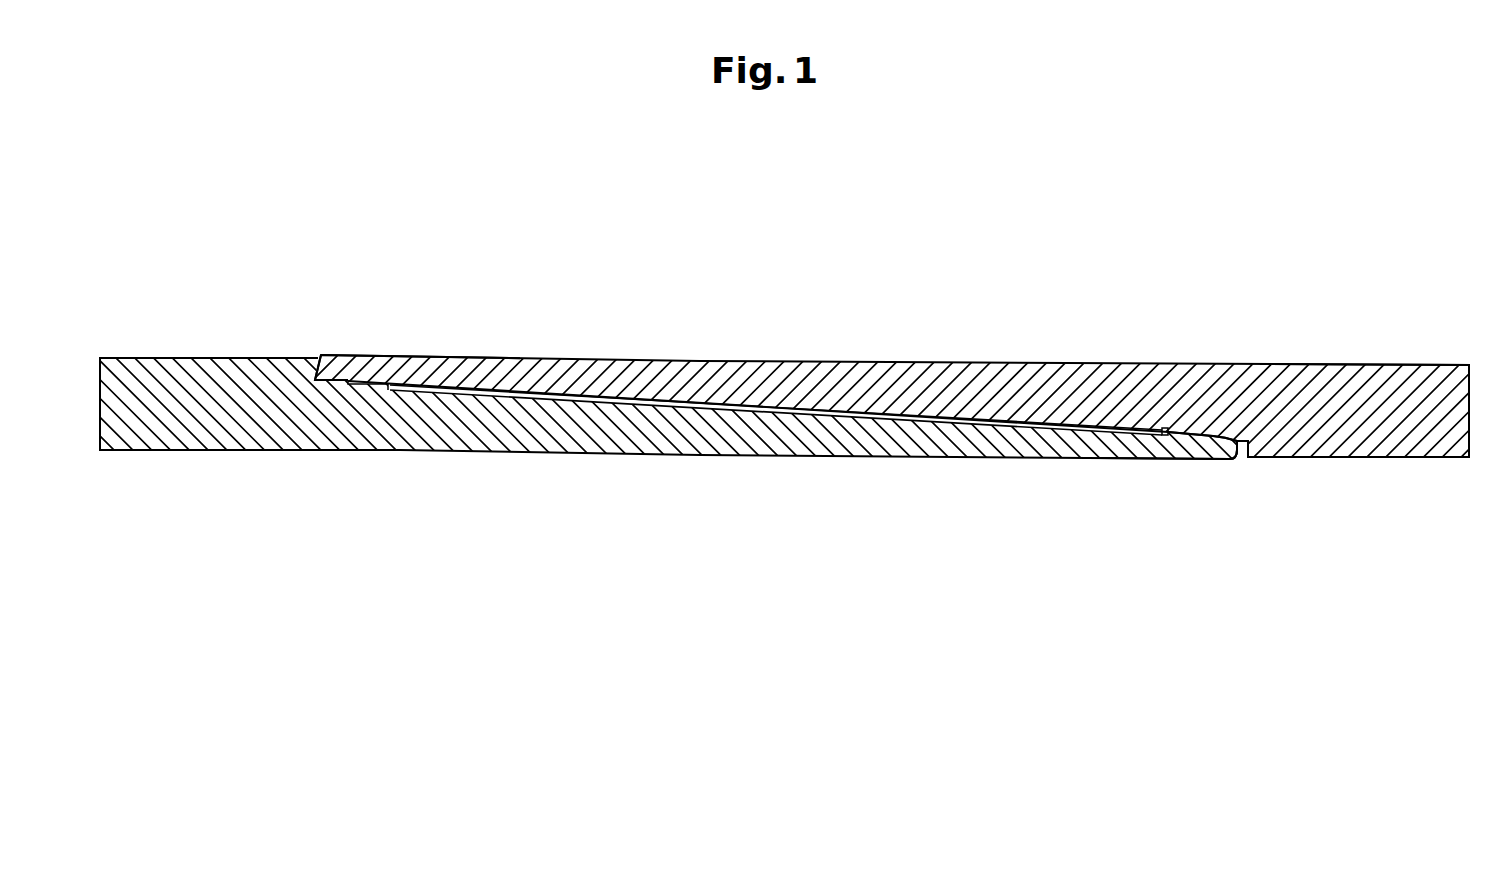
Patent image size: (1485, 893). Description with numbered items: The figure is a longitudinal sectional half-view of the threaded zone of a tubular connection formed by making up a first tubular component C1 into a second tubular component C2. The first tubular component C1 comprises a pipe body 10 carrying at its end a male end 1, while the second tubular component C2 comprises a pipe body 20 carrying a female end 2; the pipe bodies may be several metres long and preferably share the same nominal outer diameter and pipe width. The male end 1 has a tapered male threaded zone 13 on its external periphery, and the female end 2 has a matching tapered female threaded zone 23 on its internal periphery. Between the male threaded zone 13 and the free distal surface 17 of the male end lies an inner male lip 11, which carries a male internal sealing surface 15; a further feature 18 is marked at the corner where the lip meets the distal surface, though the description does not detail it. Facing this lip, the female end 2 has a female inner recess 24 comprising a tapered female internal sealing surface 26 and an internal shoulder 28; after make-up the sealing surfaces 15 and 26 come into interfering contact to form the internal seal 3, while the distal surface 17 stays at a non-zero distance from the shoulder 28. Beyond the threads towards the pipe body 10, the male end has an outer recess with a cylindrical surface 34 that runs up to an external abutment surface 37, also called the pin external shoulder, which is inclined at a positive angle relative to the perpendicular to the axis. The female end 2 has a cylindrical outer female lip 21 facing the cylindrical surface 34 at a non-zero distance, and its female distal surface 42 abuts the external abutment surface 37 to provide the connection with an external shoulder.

The male end 1 is at (975, 468).
The female end 2 is at (1004, 330).
The internal seal 3 is at (1244, 440).
The pipe body 10 is at (166, 420).
The inner male lip 11 is at (1176, 457).
The male threaded zone 13 is at (720, 410).
The male internal sealing surface 15 is at (1216, 452).
The free distal surface 17 is at (1262, 447).
The rounded edge 18 is at (1230, 460).
The pipe body 20 is at (1389, 400).
The outer female lip 21 is at (360, 362).
The female threaded zone 23 is at (810, 402).
The female inner recess 24 is at (1190, 425).
The female internal sealing surface 26 is at (1213, 432).
The internal shoulder 28 is at (1244, 450).
The male outer recess cylindrical surface 34 is at (372, 385).
The external abutment surface 37 is at (342, 384).
The female distal surface 42 is at (318, 360).
The first tubular component C1 is at (181, 334).
The second tubular component C2 is at (1425, 345).